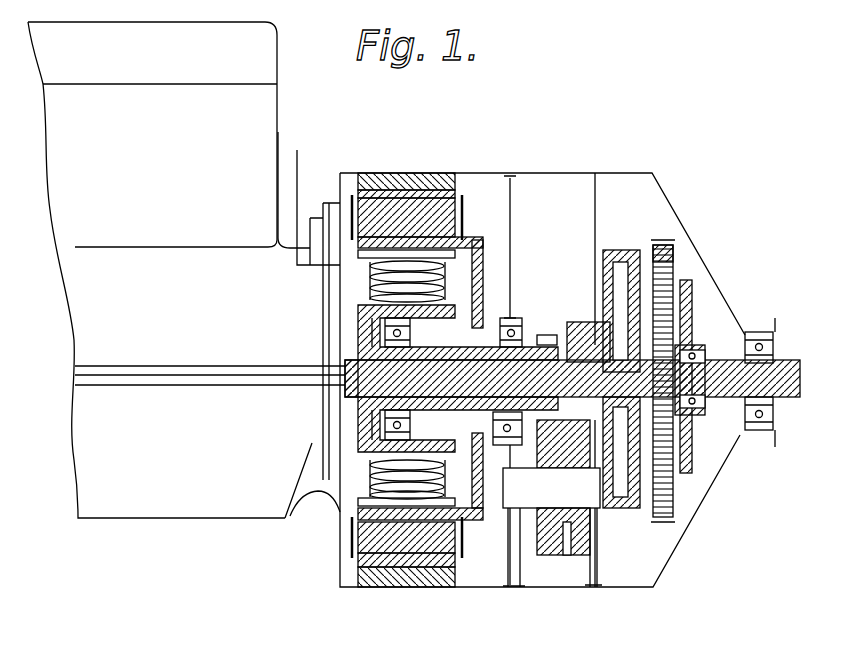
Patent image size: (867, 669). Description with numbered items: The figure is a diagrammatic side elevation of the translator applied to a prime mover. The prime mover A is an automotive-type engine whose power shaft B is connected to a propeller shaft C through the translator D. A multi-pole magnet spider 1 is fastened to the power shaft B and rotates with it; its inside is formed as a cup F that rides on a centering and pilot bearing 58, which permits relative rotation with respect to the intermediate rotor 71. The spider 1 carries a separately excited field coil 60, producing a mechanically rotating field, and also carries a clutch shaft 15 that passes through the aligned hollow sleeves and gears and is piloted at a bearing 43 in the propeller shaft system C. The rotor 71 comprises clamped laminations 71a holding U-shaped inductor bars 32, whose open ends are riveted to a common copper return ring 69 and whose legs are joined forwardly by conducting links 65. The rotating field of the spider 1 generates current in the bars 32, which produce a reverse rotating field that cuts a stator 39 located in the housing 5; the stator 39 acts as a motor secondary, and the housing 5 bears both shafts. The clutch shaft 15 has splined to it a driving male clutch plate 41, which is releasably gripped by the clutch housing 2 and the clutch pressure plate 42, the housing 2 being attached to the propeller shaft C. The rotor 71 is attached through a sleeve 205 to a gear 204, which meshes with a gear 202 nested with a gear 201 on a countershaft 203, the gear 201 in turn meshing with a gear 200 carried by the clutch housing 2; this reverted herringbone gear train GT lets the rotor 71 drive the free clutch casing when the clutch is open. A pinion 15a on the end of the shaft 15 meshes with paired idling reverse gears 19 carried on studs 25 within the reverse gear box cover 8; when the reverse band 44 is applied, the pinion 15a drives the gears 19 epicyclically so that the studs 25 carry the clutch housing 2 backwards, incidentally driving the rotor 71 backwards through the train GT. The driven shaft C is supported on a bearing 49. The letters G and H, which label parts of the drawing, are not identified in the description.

The prime mover A is at (184, 270).
The power shaft B is at (345, 388).
The propeller shaft C is at (780, 392).
The translator D is at (569, 179).
The cup F is at (370, 330).
The armature plate G is at (462, 232).
The housing H is at (376, 173).
The gear train GT is at (566, 578).
The magnet spider 1 is at (440, 288).
The clutch housing 2 is at (625, 262).
The housing 5 is at (468, 173).
The reverse gear box cover 8 is at (673, 258).
The clutch shaft 15 is at (514, 340).
The pinion 15a is at (688, 355).
The reverse gears 19 is at (665, 322).
The studs 25 is at (690, 292).
The inductor bars 32 is at (420, 192).
The stator 39 is at (396, 176).
The male clutch plate 41 is at (610, 262).
The clutch pressure plate 42 is at (638, 262).
The bearing 43 is at (688, 425).
The reverse band 44 is at (665, 245).
The bearing 49 is at (763, 332).
The bearing 58 is at (410, 424).
The field coil 60 is at (377, 282).
The conducting connecting link 65 is at (458, 222).
The copper end ring 69 is at (328, 216).
The rotor 71 is at (360, 205).
The laminations 71a is at (378, 222).
The gear 200 is at (580, 324).
The gear 201 is at (575, 545).
The gear 202 is at (525, 568).
The countershaft 203 is at (551, 488).
The gear 204 is at (558, 345).
The sleeve 205 is at (443, 340).